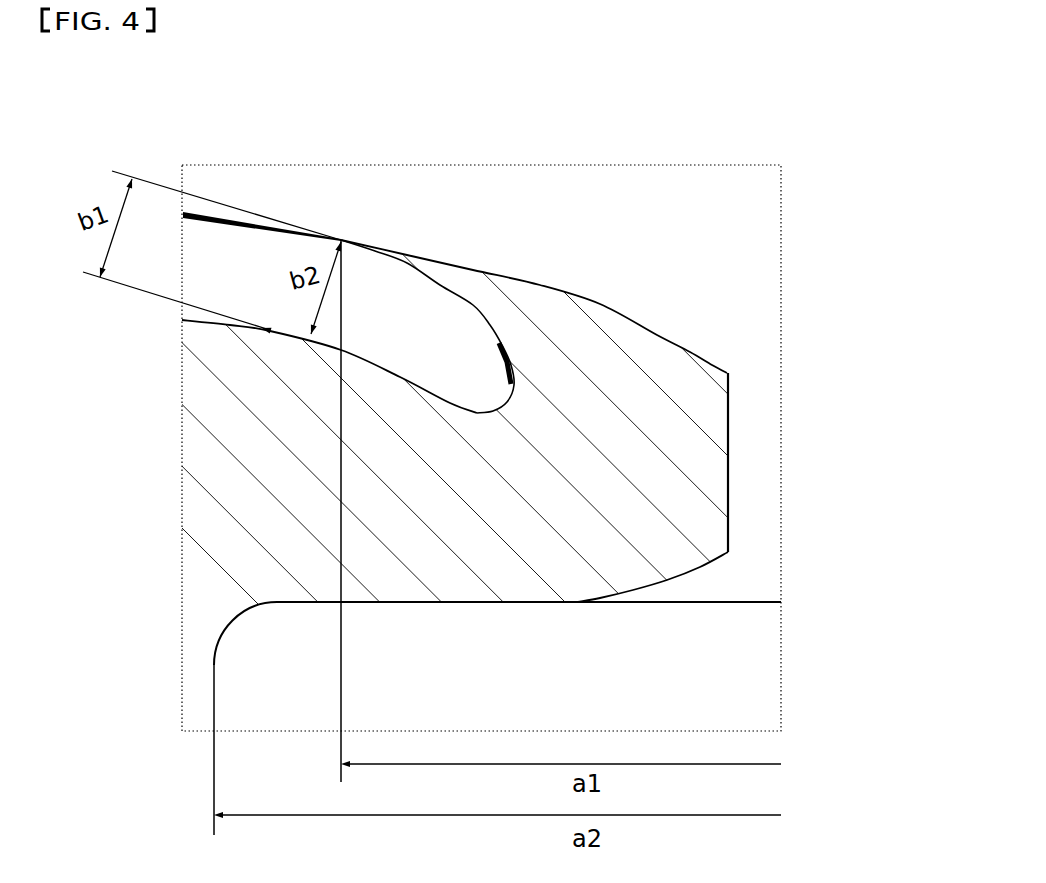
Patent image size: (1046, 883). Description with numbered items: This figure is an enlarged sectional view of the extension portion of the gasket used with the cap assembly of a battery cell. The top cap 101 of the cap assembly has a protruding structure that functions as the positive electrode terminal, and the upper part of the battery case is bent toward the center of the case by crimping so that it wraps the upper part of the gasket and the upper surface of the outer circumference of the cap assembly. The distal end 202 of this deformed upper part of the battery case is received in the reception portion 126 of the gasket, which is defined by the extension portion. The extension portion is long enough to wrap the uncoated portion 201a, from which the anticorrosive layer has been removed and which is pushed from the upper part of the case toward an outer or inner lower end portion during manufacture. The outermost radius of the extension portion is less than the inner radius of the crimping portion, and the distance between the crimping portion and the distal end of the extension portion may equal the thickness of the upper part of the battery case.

The top cap 101 is at (755, 668).
The distal end of the upper part of the battery case 202 is at (487, 393).
The uncoated portion 201a is at (520, 357).
The reception portion 126 is at (517, 272).